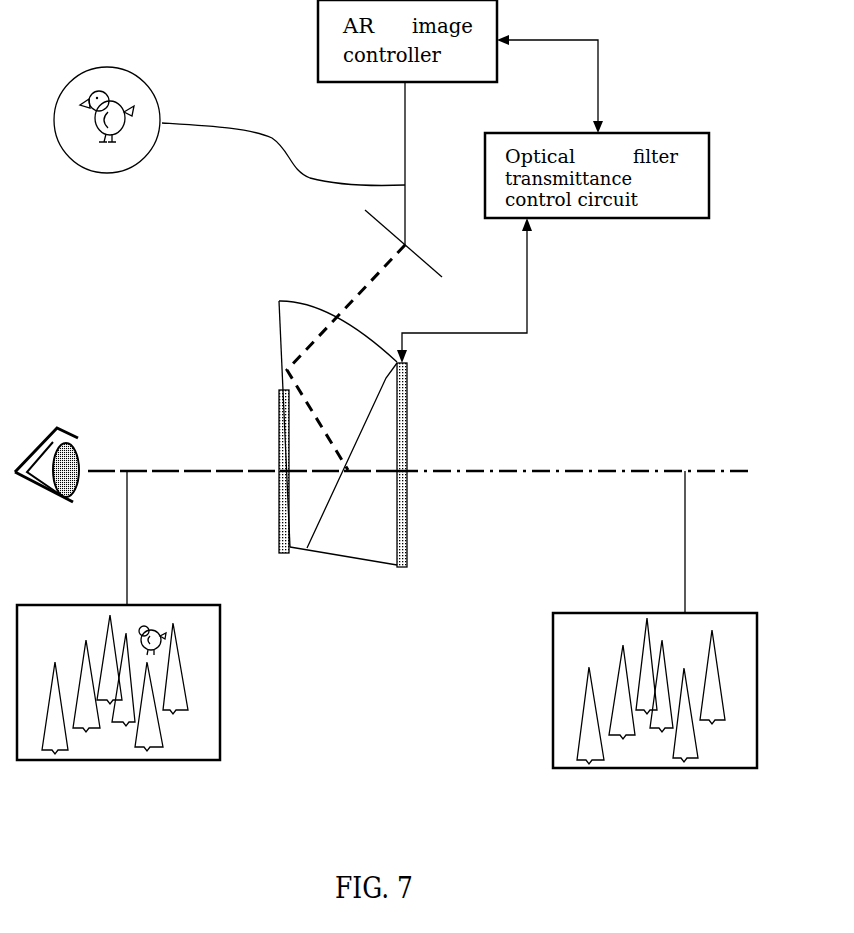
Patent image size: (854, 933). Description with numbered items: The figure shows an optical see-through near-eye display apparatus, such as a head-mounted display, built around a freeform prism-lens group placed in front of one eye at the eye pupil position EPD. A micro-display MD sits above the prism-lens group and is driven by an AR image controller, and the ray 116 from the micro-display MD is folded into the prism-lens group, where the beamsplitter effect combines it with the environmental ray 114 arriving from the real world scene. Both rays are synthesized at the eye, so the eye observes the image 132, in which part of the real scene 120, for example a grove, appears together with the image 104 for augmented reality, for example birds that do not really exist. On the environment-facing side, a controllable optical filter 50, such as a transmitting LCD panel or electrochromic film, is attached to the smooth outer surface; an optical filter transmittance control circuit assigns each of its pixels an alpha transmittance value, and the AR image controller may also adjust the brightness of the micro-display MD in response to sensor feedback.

The image for augmented reality 104 is at (75, 160).
The micro-display MD is at (362, 221).
The controllable optical filter 50 is at (400, 568).
The ray from the micro-display 116 is at (171, 470).
The ray from the real world scene 114 is at (659, 470).
The eye pupil / exit pupil EPD is at (103, 518).
The image observed by the eye 132 is at (48, 760).
The real scene 120 is at (588, 768).